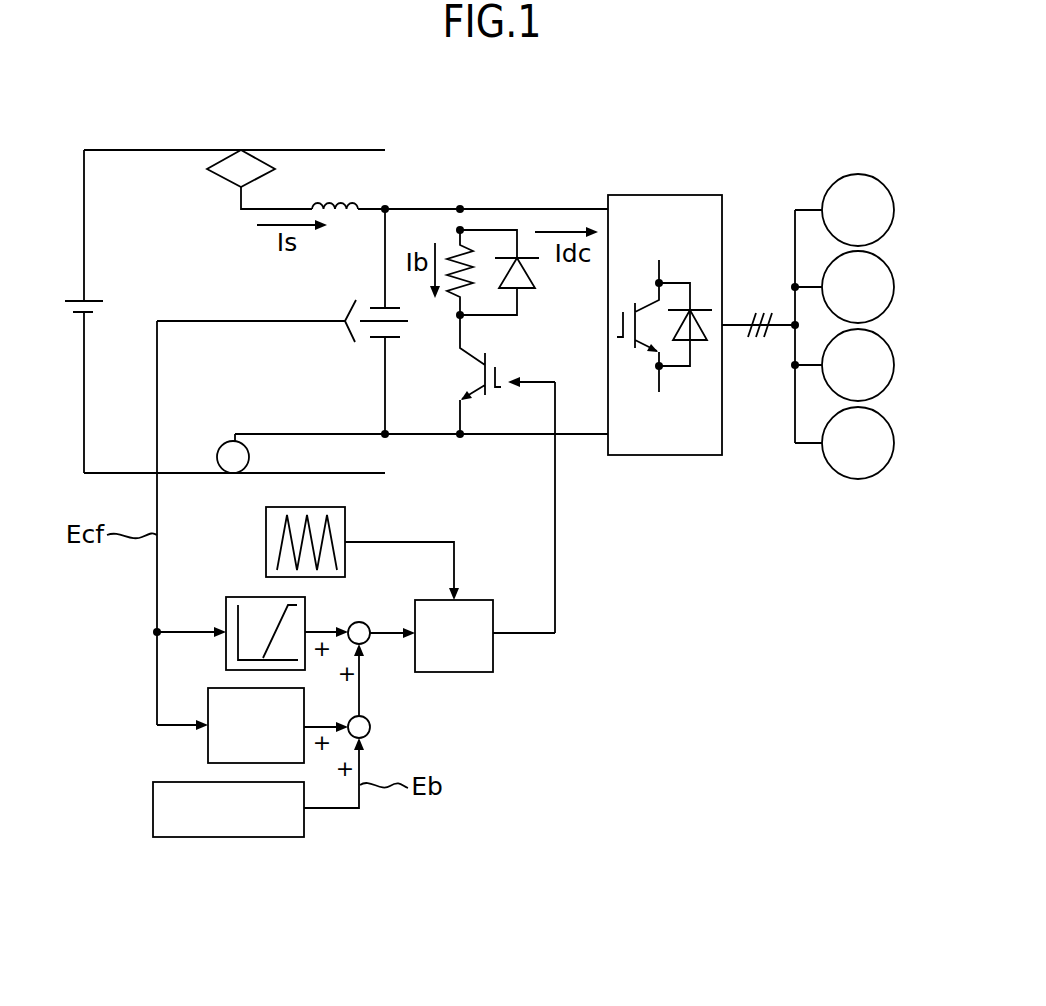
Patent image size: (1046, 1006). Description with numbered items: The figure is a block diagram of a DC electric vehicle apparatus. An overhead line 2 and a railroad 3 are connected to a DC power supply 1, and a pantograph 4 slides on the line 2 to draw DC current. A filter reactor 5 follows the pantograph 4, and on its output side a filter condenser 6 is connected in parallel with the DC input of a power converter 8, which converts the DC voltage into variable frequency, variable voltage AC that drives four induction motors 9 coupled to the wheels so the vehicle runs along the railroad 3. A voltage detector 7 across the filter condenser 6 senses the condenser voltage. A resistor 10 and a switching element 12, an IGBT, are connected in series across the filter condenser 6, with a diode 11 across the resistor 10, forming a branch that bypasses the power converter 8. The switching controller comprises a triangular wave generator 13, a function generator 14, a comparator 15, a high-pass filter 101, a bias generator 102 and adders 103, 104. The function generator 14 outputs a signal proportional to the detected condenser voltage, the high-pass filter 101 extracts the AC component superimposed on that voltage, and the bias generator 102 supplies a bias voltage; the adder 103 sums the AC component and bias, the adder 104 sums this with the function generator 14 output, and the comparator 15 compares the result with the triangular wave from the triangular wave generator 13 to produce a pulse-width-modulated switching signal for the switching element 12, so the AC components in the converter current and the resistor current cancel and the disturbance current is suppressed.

The DC power supply 1 is at (94, 301).
The overhead wire (line) 2 is at (157, 150).
The railroad 3 is at (115, 473).
The pantograph 4 is at (223, 178).
The filter reactor 5 is at (352, 199).
The filter condenser 6 is at (380, 306).
The voltage detector 7 is at (347, 340).
The power converter 8 is at (660, 455).
The induction motors 9 is at (858, 480).
The resistor 10 is at (457, 297).
The diode 11 is at (527, 292).
The switching element 12 is at (488, 393).
The triangular wave generator 13 is at (266, 543).
The function generator 14 is at (226, 614).
The comparator 15 is at (493, 655).
The high-pass filter 101 is at (208, 747).
The bias generator 102 is at (153, 805).
The adder 103 is at (370, 727).
The adder 104 is at (365, 621).